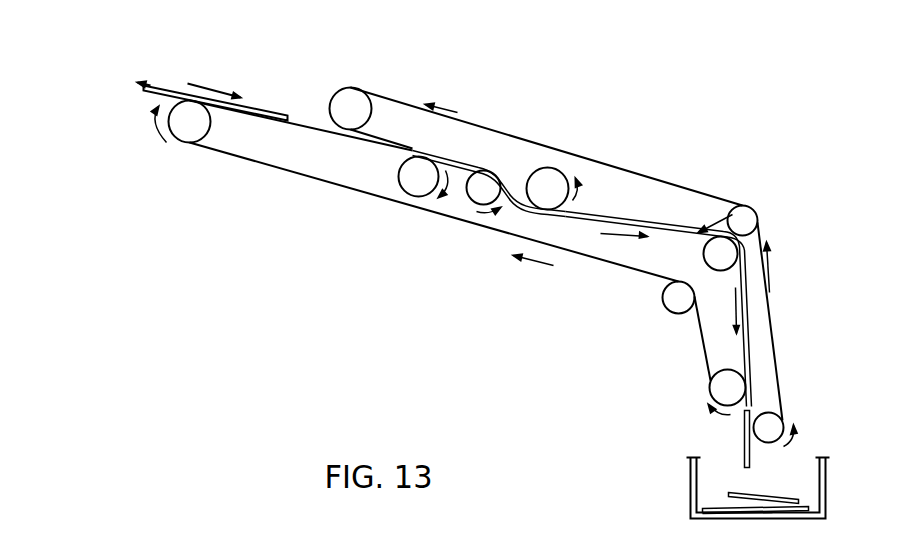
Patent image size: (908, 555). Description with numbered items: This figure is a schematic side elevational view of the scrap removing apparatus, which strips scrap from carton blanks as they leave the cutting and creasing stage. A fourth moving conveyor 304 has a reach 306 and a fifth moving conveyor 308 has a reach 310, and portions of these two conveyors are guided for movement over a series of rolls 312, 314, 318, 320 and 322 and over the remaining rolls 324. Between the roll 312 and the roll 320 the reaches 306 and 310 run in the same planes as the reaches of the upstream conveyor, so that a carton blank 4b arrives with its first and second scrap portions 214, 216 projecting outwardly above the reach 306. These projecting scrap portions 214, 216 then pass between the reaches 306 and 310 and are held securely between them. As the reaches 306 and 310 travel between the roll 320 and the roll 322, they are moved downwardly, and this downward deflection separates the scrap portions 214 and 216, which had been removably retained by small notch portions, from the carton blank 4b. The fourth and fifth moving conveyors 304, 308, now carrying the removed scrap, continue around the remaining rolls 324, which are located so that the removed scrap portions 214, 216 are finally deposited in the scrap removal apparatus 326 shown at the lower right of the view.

The carton blank 4b is at (266, 108).
The reach of fourth moving conveyor 306 is at (302, 126).
The roll 312 is at (190, 144).
The roll 314 is at (350, 97).
The reach of fifth moving conveyor 310 is at (384, 138).
The fifth moving conveyor 308 is at (685, 185).
The roll 318 is at (410, 185).
The roll 320 is at (473, 203).
The roll 322 is at (547, 178).
The second portion of scrap material 216 is at (456, 156).
The first portion of scrap material 214 is at (553, 214).
The fourth moving conveyor 304 is at (548, 277).
The rolls 324 is at (716, 253).
The scrap removal apparatus 326 is at (818, 514).